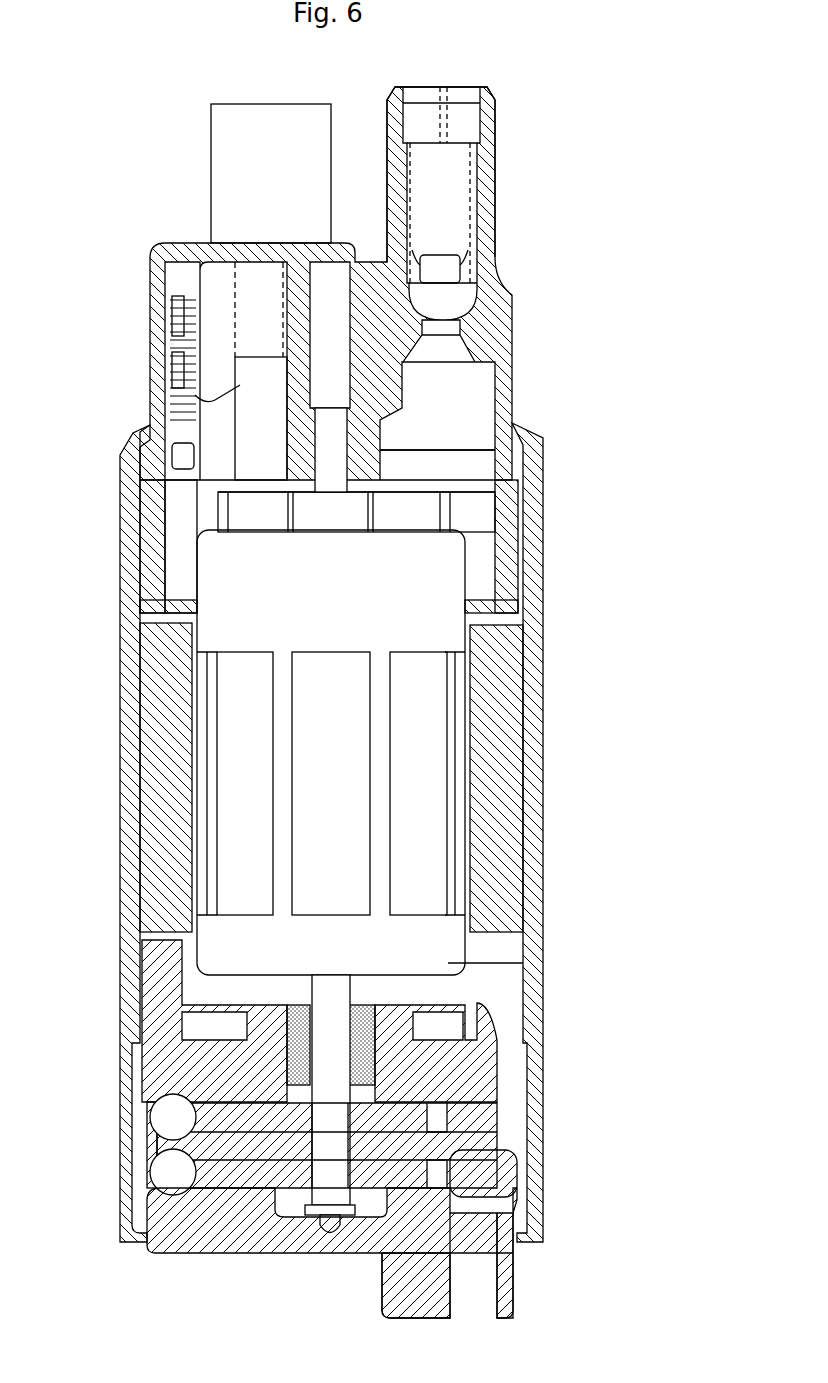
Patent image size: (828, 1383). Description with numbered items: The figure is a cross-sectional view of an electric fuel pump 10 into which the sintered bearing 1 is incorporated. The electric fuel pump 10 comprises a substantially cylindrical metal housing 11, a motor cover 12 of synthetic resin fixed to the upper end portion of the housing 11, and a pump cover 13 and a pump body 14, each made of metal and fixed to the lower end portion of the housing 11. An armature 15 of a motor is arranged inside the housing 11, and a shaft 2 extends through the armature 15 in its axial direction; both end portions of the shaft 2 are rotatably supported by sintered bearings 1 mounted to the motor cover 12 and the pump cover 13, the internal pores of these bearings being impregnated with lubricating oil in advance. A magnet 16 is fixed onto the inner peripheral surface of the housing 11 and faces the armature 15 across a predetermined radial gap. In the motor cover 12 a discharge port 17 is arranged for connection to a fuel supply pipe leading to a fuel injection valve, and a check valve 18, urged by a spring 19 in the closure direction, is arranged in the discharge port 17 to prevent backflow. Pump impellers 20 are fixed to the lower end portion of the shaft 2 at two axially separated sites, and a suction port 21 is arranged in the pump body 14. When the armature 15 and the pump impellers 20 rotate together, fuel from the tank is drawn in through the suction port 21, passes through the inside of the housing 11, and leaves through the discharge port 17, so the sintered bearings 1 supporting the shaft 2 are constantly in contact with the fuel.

The sintered bearing 1 is at (372, 455).
The shaft 2 is at (340, 990).
The electric fuel pump 10 is at (607, 467).
The housing 11 is at (540, 691).
The motor cover 12 is at (488, 302).
The pump cover 13 is at (160, 996).
The pump body 14 is at (232, 1245).
The armature 15 is at (225, 583).
The magnet 16 is at (512, 822).
The discharge port 17 is at (450, 176).
The check valve 18 is at (452, 302).
The spring 19 is at (483, 236).
The pump impeller 20 is at (163, 1118).
The suction port 21 is at (472, 1298).